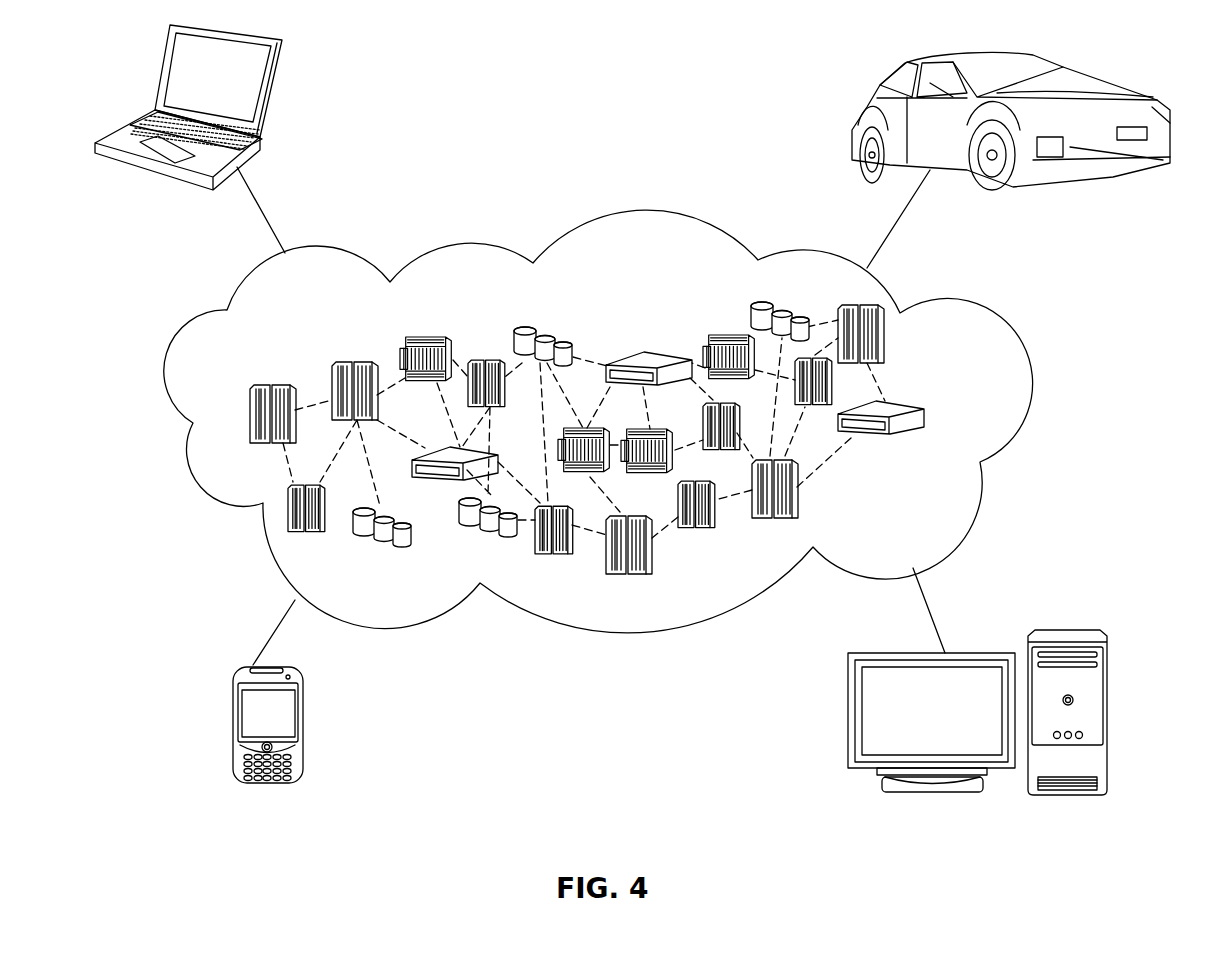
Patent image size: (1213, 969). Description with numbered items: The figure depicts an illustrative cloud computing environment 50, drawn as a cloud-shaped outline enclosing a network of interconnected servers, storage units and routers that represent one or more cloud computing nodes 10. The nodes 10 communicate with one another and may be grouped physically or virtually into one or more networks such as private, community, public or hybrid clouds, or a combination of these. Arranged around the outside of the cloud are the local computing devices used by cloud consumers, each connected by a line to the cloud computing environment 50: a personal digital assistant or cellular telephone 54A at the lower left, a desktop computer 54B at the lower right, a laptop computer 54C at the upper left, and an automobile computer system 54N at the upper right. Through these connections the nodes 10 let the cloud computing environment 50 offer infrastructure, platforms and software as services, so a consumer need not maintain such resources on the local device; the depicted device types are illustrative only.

The cloud computing node 10 is at (968, 414).
The cloud computing environment 50 is at (990, 330).
The personal digital assistant or cellular telephone 54A is at (233, 728).
The desktop computer 54B is at (1073, 628).
The laptop computer 54C is at (270, 92).
The automobile computer system 54N is at (858, 102).